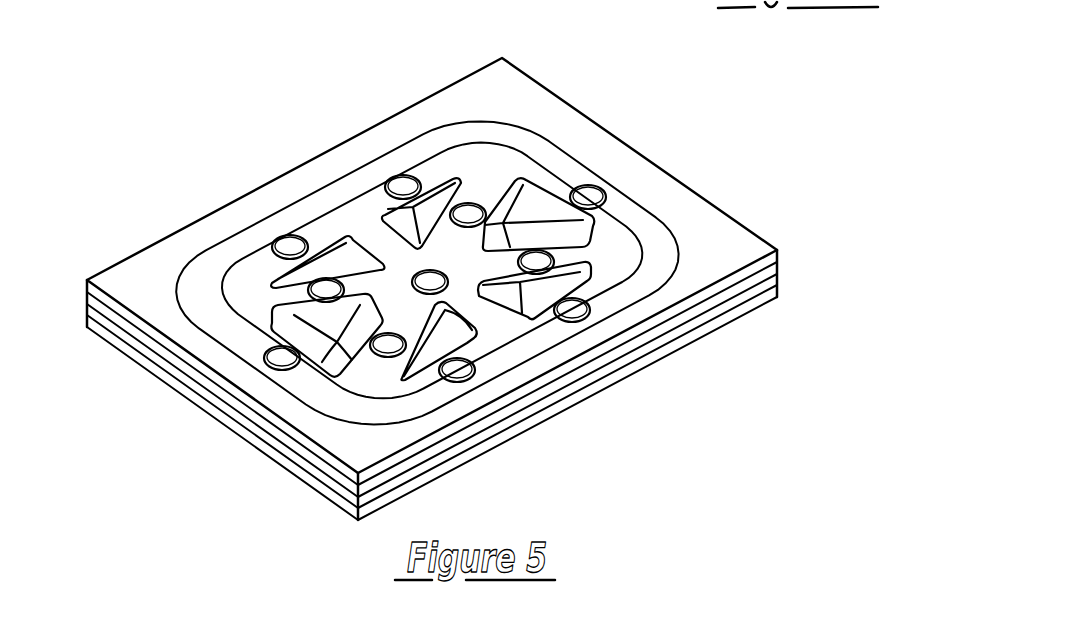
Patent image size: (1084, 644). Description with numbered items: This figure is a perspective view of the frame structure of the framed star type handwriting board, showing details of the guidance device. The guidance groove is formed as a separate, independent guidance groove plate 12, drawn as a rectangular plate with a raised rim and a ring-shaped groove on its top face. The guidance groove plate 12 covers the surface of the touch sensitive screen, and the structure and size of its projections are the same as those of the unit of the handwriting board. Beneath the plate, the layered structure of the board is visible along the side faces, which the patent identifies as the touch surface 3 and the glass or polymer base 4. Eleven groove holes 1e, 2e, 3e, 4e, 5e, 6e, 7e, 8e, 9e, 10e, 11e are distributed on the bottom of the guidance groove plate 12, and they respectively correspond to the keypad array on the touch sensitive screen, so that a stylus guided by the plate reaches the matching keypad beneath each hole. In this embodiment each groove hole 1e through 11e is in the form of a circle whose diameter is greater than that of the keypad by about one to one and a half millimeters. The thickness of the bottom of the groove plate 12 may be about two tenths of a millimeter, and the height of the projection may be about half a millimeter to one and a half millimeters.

The guidance groove plate 12 is at (712, 230).
The touch surface 3 is at (777, 272).
The glass or polymer base 4 is at (740, 312).
The groove hole 1e is at (588, 197).
The groove hole 2e is at (403, 187).
The groove hole 3e is at (468, 215).
The groove hole 4e is at (536, 262).
The groove hole 5e is at (572, 310).
The groove hole 6e is at (430, 282).
The groove hole 7e is at (290, 247).
The groove hole 8e is at (326, 290).
The groove hole 9e is at (388, 345).
The groove hole 10e is at (457, 370).
The groove hole 11e is at (270, 359).